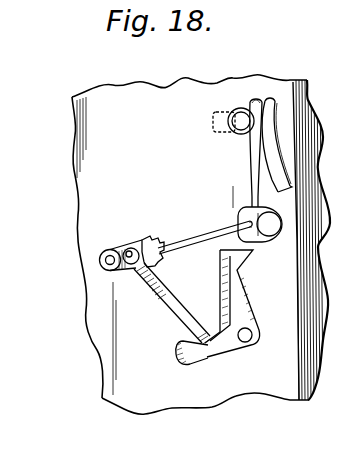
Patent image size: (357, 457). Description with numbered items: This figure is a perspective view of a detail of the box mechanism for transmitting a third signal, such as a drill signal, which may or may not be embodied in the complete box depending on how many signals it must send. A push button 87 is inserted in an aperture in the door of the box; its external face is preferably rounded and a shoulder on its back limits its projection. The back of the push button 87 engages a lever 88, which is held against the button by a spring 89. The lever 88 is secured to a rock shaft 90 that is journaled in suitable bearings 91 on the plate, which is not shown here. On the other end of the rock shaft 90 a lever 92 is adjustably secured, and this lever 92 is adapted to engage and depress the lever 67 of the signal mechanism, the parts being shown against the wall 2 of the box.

The plate / frame wall 2 is at (104, 160).
The lever 67 is at (231, 344).
The push button 87 is at (237, 115).
The lever 88 is at (255, 172).
The spring 89 is at (264, 141).
The rock shaft 90 is at (203, 238).
The bearings 91 is at (263, 236).
The lever 92 is at (166, 293).